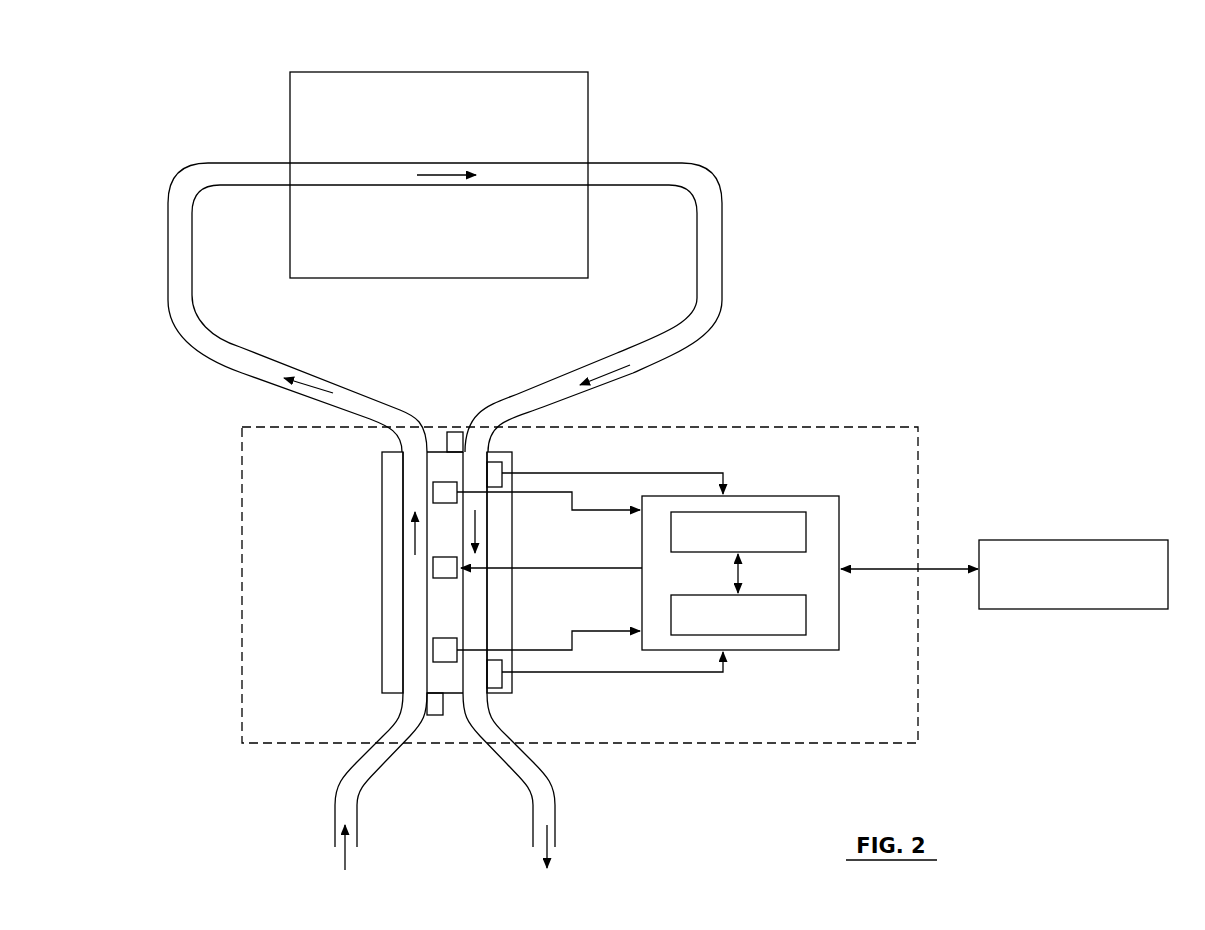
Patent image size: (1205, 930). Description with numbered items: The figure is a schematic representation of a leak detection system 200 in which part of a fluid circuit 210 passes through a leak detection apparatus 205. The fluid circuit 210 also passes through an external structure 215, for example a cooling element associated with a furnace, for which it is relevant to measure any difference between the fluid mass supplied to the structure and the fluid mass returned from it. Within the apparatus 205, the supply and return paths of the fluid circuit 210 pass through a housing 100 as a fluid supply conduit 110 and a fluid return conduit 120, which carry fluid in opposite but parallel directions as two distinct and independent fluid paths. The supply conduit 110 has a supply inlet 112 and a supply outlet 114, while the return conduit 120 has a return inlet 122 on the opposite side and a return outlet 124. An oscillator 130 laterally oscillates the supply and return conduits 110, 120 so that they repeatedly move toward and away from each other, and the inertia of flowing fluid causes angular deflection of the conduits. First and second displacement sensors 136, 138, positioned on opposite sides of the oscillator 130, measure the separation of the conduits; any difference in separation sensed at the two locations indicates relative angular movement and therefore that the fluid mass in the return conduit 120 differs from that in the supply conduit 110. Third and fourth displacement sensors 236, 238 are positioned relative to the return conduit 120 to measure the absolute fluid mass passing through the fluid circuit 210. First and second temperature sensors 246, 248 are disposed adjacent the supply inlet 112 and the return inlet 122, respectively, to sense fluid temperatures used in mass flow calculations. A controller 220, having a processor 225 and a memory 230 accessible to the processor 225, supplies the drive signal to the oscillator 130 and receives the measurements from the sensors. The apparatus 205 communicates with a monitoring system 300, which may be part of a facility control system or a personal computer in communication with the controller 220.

The housing 100 is at (382, 525).
The fluid supply conduit 110 is at (403, 563).
The supply inlet 112 is at (311, 787).
The supply outlet 114 is at (414, 404).
The fluid return conduit 120 is at (497, 600).
The return inlet 122 is at (530, 422).
The return outlet 124 is at (600, 791).
The oscillator 130 is at (435, 570).
The first displacement sensor 136 is at (440, 648).
The second displacement sensor 138 is at (440, 492).
The leak detection system 200 is at (780, 72).
The leak detection apparatus 205 is at (716, 427).
The fluid circuit 210 is at (722, 247).
The external structure 215 is at (528, 72).
The controller 220 is at (748, 496).
The processor 225 is at (806, 525).
The memory 230 is at (752, 650).
The third displacement sensor 236 is at (500, 690).
The fourth displacement sensor 238 is at (500, 468).
The first temperature sensor 246 is at (435, 717).
The second temperature sensor 248 is at (462, 432).
The monitoring system 300 is at (1032, 540).